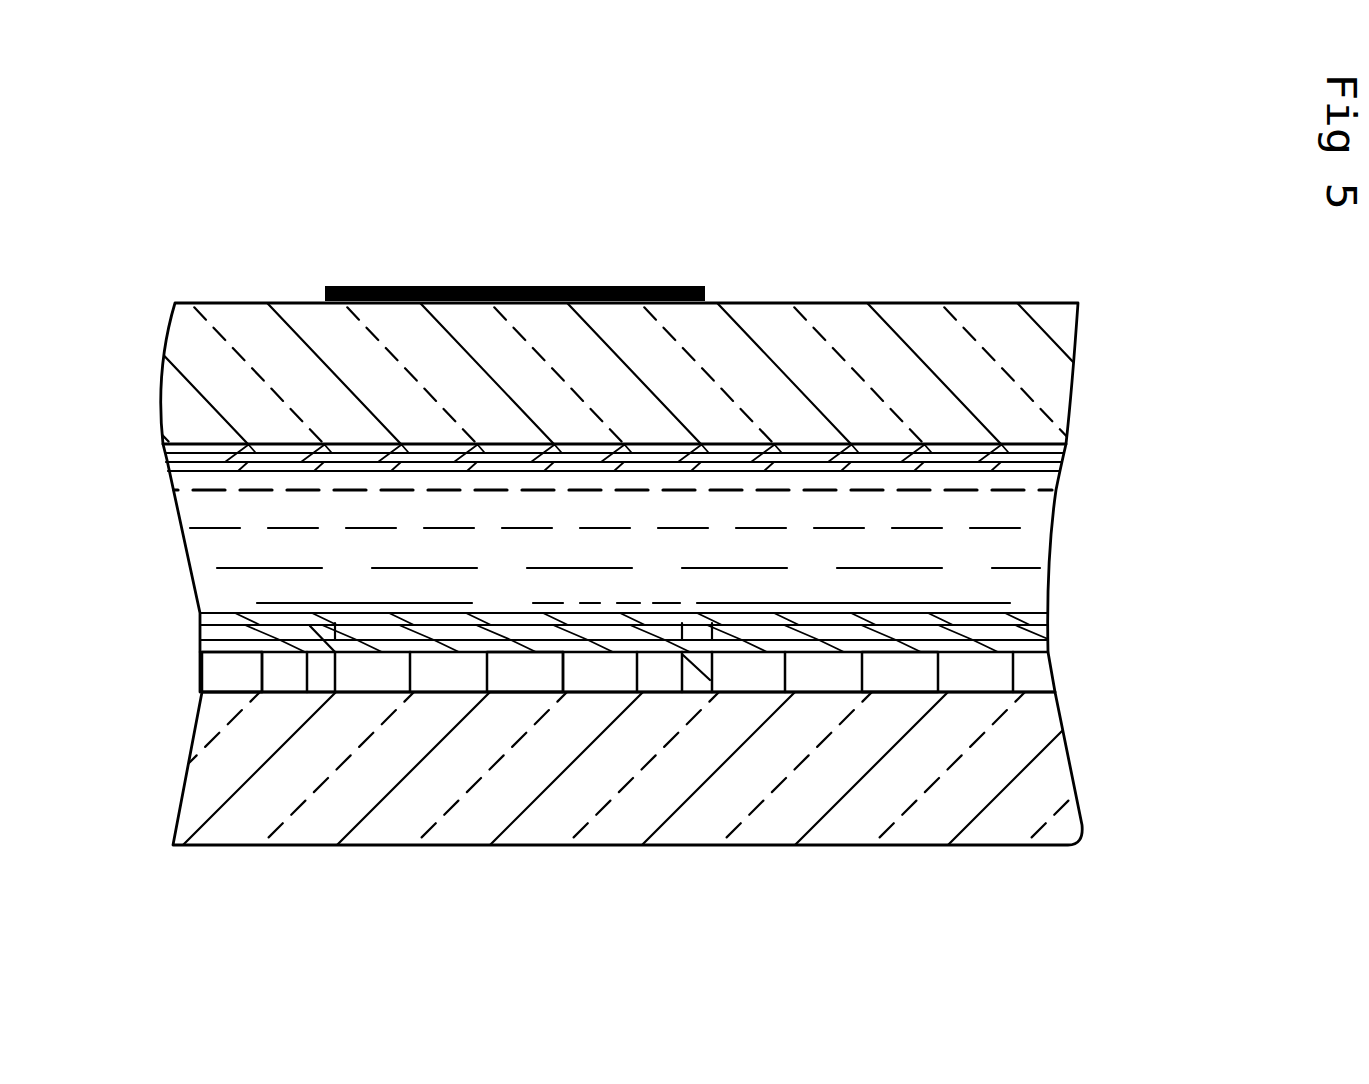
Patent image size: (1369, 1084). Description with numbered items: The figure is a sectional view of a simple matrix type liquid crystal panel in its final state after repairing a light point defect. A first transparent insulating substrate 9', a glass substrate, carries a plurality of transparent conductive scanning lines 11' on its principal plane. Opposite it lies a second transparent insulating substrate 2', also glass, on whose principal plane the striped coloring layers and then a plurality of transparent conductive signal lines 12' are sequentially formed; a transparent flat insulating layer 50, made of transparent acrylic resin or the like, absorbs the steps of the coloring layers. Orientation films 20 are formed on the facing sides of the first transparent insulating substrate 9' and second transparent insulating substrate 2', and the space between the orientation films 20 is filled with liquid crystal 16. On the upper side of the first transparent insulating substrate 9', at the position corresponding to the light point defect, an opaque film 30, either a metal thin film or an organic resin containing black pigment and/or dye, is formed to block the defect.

The second transparent insulating substrate 2' is at (680, 813).
The first transparent insulating substrate 9' is at (631, 334).
The transparent conductive scanning lines 11' is at (614, 335).
The transparent conductive signal lines 12' is at (623, 748).
The liquid crystal 16 is at (1023, 503).
The orientation films 20 is at (247, 616).
The opaque film 30 is at (485, 286).
The transparent flat insulating layer 50 is at (1017, 650).